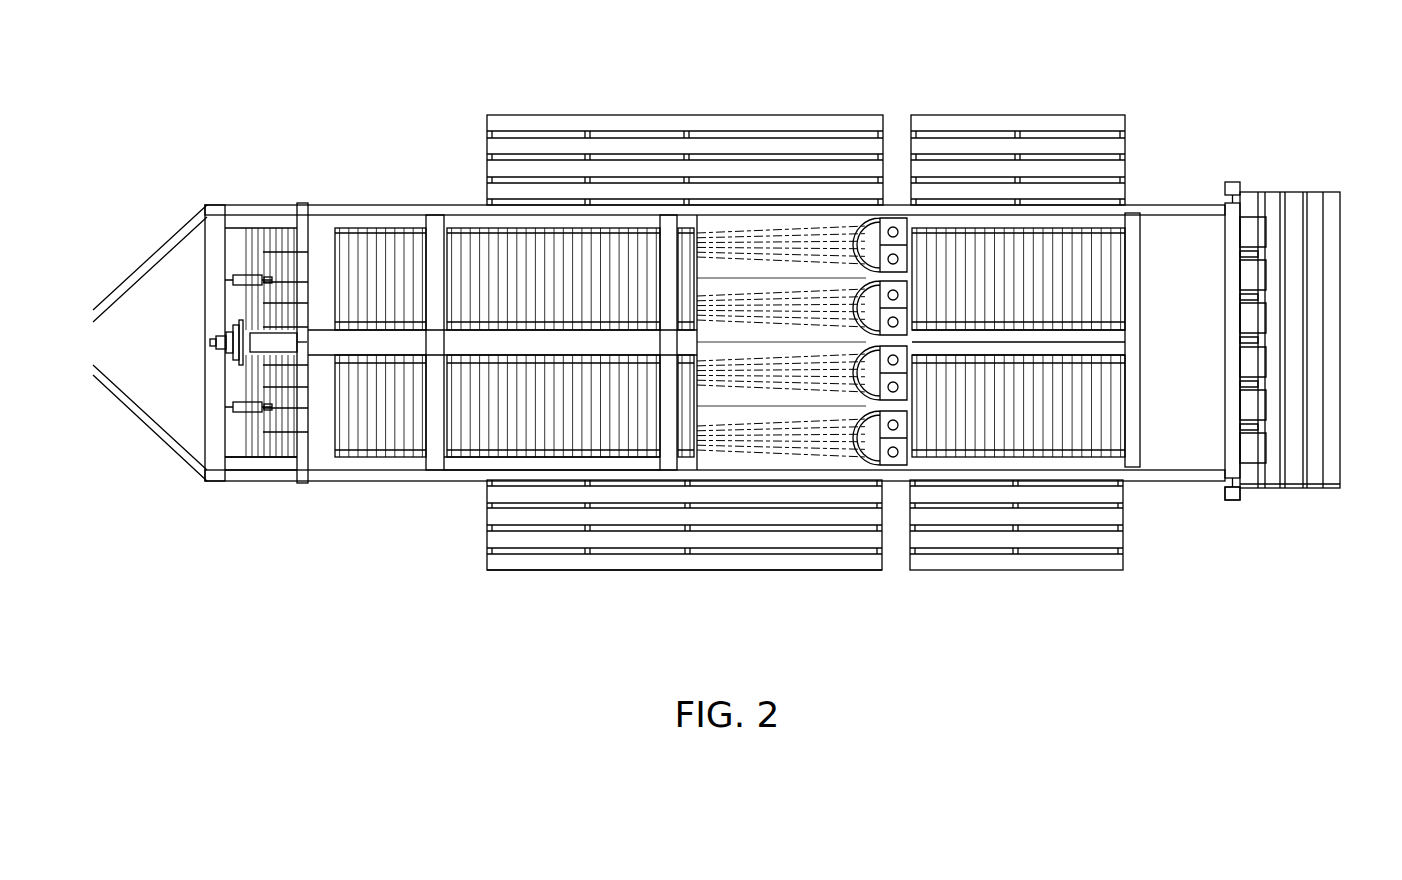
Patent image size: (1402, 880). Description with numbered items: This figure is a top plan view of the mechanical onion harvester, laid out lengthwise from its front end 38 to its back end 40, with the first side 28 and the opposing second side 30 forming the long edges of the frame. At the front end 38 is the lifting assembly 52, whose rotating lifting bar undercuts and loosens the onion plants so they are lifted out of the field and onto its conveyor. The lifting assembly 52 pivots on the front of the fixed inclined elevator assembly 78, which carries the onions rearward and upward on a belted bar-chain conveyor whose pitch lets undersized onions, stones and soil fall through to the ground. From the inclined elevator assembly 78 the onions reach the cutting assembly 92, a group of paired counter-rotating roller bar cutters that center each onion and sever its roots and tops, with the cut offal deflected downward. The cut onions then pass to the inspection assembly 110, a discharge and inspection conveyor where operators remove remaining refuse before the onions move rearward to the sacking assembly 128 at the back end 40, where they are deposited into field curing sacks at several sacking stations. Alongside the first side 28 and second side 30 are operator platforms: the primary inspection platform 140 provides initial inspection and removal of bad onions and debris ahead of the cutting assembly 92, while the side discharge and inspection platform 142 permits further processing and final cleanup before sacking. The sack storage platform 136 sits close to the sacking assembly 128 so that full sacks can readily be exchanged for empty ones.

The front end 38 is at (123, 204).
The second side 30 is at (736, 98).
The cutting assembly 92 is at (800, 228).
The inspection assembly 110 is at (1068, 252).
The back end 40 is at (1291, 182).
The lifting assembly 52 is at (282, 462).
The inclined elevator assembly 78 is at (467, 462).
The primary inspection platform 140 is at (573, 562).
The first side 28 is at (778, 580).
The side discharge and inspection platform 142 is at (982, 562).
The sack storage platform 136 is at (1310, 473).
The sacking assembly 128 is at (1264, 500).